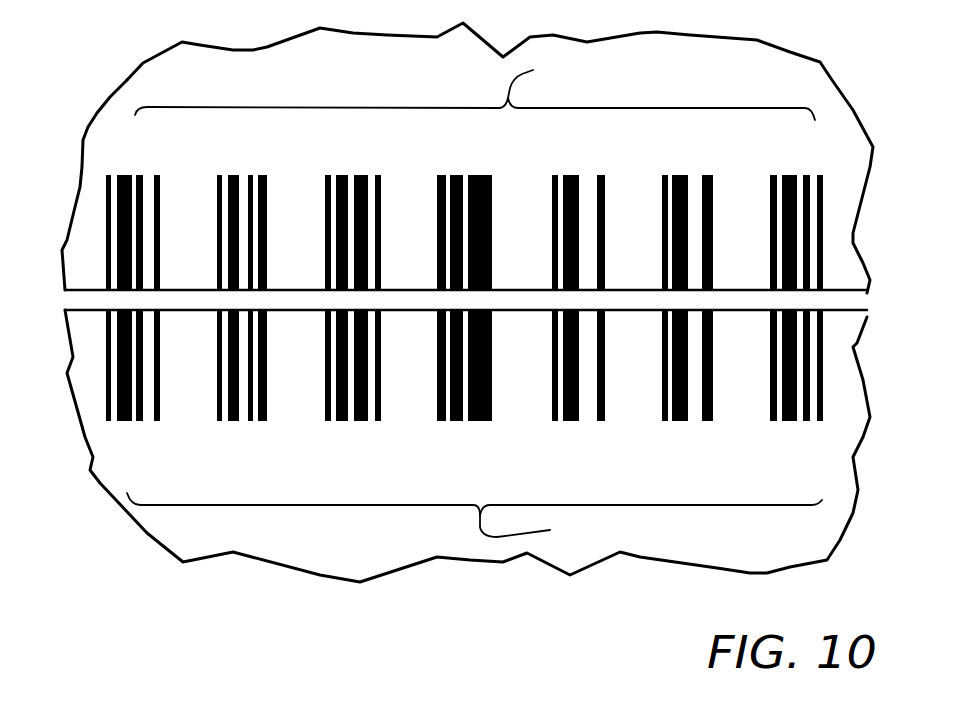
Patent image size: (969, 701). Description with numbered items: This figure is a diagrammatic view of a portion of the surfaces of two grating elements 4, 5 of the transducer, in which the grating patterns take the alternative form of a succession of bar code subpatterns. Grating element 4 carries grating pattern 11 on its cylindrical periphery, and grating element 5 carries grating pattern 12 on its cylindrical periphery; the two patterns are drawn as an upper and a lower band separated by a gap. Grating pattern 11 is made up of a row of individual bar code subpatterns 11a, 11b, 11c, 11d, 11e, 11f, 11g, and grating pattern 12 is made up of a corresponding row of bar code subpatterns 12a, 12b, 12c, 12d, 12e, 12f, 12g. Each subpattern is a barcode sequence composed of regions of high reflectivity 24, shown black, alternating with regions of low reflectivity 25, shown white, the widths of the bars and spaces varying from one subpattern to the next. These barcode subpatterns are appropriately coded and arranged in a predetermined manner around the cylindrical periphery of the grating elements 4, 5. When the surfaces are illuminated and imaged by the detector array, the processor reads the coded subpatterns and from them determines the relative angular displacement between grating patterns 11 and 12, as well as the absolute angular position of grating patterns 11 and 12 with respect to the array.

The grating element 4 is at (803, 70).
The grating element 5 is at (177, 537).
The grating pattern 11 is at (475, 88).
The grating pattern 12 is at (474, 524).
The bar code subpattern 11a is at (134, 216).
The bar code subpattern 11b is at (253, 201).
The bar code subpattern 11c is at (353, 210).
The bar code subpattern 11d is at (460, 205).
The bar code subpattern 11e is at (573, 205).
The bar code subpattern 11f is at (682, 203).
The bar code subpattern 11g is at (790, 183).
The bar code subpattern 12a is at (125, 423).
The bar code subpattern 12b is at (233, 423).
The bar code subpattern 12c is at (343, 423).
The bar code subpattern 12d is at (453, 423).
The bar code subpattern 12e is at (570, 423).
The bar code subpattern 12f is at (680, 423).
The bar code subpattern 12g is at (787, 423).
The region of high reflectivity 24 is at (127, 180).
The region of low reflectivity 25 is at (148, 180).